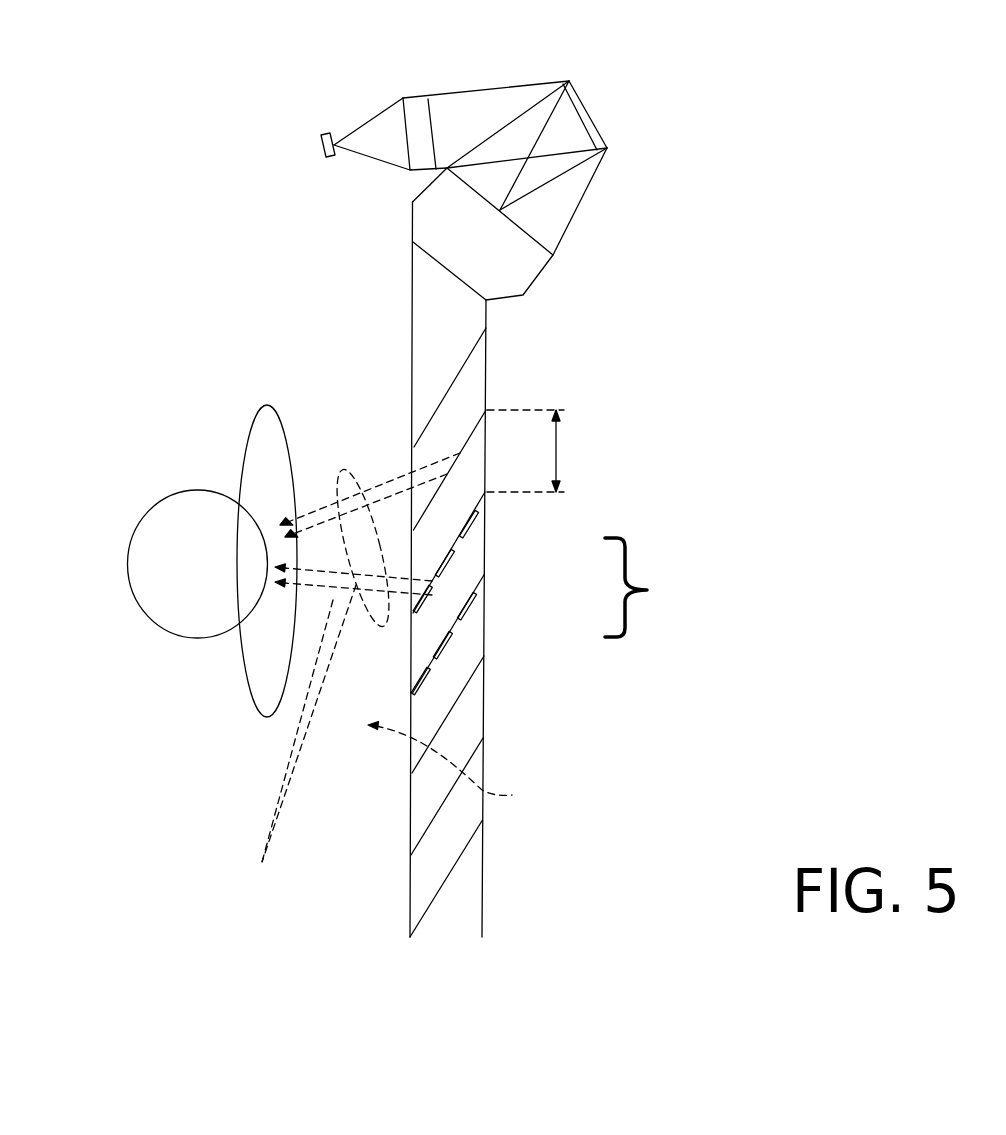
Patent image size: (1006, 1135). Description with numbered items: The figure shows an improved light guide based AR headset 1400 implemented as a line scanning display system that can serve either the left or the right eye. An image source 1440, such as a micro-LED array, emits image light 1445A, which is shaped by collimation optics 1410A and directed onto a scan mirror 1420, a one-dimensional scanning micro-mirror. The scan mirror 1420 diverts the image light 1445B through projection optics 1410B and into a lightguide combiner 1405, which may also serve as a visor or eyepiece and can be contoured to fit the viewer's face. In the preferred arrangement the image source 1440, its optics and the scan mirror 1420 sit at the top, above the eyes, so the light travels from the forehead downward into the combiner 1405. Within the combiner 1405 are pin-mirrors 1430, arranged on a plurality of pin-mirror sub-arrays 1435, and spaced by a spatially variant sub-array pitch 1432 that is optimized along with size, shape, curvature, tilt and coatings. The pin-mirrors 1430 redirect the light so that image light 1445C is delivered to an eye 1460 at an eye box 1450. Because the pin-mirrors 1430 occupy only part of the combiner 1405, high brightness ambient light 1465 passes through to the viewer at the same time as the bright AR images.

The light guide based AR headset 1400 is at (158, 212).
The combiner 1405 is at (487, 342).
The collimation optics 1410A is at (417, 108).
The projection optics 1410B is at (550, 273).
The scan mirror 1420 is at (583, 103).
The pin-mirrors 1430 is at (472, 523).
The sub-array pitch 1432 is at (558, 450).
The pin-mirror sub-arrays 1435 is at (671, 587).
The image source 1440 is at (317, 137).
The image light 1445A is at (385, 167).
The image light 1445B is at (590, 190).
The image light 1445C is at (313, 686).
The eye box 1450 is at (245, 447).
The eye 1460 is at (140, 523).
The ambient light 1465 is at (470, 768).